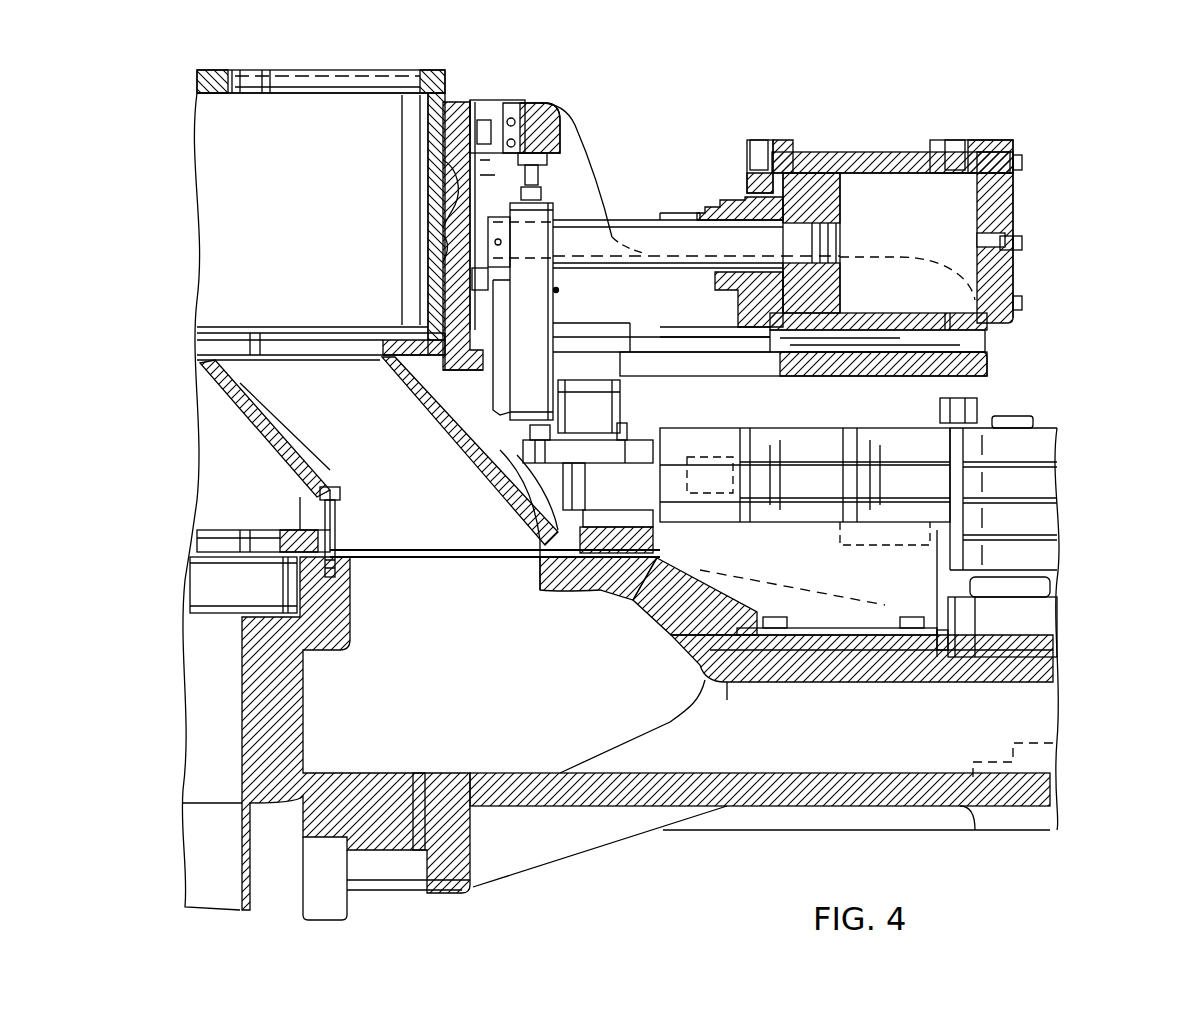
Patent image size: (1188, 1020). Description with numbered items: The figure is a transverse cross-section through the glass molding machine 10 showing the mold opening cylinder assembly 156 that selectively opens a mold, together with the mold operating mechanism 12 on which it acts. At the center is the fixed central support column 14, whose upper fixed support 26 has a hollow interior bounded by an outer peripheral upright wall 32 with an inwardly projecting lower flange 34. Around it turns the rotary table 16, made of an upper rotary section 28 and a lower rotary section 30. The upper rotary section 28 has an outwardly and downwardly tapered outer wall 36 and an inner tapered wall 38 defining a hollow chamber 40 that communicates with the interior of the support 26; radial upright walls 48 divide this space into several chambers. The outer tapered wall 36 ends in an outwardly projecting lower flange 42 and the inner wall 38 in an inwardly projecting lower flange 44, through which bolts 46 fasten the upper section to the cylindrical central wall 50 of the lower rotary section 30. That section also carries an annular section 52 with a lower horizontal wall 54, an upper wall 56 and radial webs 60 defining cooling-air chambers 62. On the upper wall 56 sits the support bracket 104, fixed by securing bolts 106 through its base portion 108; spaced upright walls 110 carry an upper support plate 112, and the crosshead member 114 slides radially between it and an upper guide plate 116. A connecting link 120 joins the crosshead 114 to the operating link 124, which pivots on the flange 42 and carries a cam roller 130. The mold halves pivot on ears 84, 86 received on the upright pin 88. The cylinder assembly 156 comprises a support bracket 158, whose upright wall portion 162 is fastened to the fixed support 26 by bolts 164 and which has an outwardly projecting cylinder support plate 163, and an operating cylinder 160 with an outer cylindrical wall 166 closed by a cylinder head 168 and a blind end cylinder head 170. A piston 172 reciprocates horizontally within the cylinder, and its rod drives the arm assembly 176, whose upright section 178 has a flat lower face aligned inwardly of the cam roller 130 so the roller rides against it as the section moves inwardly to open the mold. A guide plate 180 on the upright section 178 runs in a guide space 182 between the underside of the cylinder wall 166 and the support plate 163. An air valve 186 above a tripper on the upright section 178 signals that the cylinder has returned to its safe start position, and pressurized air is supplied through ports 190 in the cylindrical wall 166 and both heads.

The glass molding machine 10 is at (590, 118).
The mold operating mechanism 12 is at (990, 405).
The central support column 14 is at (194, 165).
The rotary table 16 is at (1066, 673).
The upper fixed support 26 is at (194, 79).
The upper rotary section 28 is at (440, 427).
The lower rotary section 30 is at (632, 606).
The outer peripheral upright wall 32 is at (428, 145).
The lower flange 34 is at (395, 330).
The outer tapered wall 36 is at (427, 400).
The inner tapered wall 38 is at (240, 385).
The hollow chamber 40 is at (460, 519).
The lower flange 42 is at (520, 562).
The lower flange 44 is at (253, 530).
The bolts 46 is at (340, 537).
The radial upright walls 48 is at (210, 407).
The cylindrical central wall 50 is at (290, 715).
The annular section 52 is at (682, 836).
The lower horizontal wall 54 is at (808, 773).
The upper wall 56 is at (747, 684).
The radial upright webs 60 is at (918, 746).
The chambers 62 is at (1040, 713).
The ears 84 is at (1040, 440).
The ears 86 is at (1040, 480).
The pin 88 is at (1037, 420).
The support bracket 104 is at (743, 632).
The securing bolts 106 is at (783, 636).
The base portion 108 is at (843, 640).
The upright walls 110 is at (815, 590).
The upper support plate 112 is at (680, 615).
The crosshead member 114 is at (867, 443).
The upper guide plate 116 is at (797, 417).
The connecting link 120 is at (820, 487).
The operating link 124 is at (630, 230).
The cam roller 130 is at (597, 402).
The mold opening cylinder assembly 156 is at (678, 212).
The cylinder support bracket 158 is at (443, 364).
The operating cylinder 160 is at (878, 148).
The upright wall portion 162 is at (440, 255).
The cylinder support plate 163 is at (747, 367).
The bolts 164 is at (483, 122).
The outer cylindrical wall 166 is at (905, 175).
The cylinder head 168 is at (1005, 200).
The blind end cylinder head 170 is at (740, 307).
The piston 172 is at (840, 200).
The arm assembly 176 is at (560, 290).
The upright section 178 is at (535, 320).
The guide plate 180 is at (960, 338).
The guide space 182 is at (935, 320).
The air valve 186 is at (557, 102).
The ports 190 is at (753, 140).